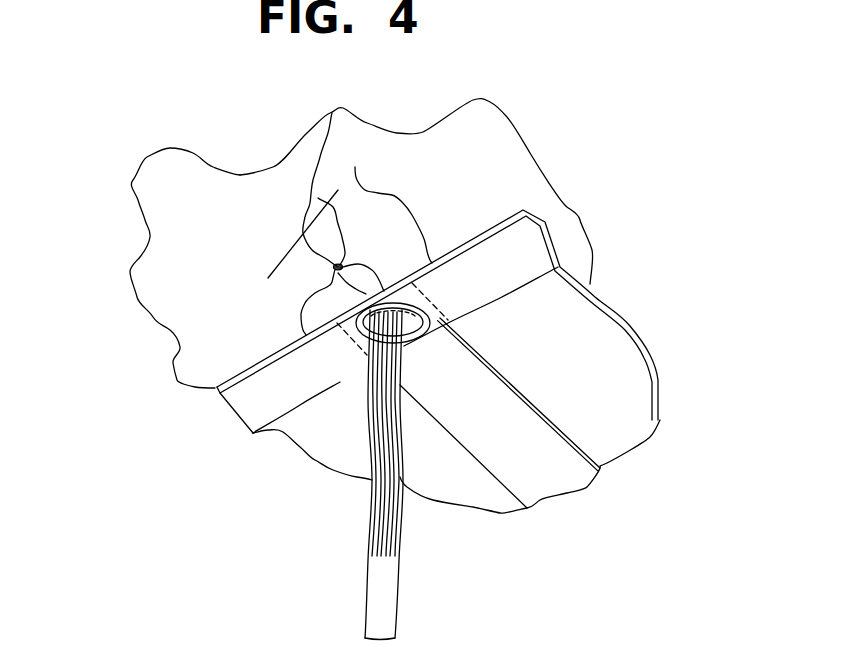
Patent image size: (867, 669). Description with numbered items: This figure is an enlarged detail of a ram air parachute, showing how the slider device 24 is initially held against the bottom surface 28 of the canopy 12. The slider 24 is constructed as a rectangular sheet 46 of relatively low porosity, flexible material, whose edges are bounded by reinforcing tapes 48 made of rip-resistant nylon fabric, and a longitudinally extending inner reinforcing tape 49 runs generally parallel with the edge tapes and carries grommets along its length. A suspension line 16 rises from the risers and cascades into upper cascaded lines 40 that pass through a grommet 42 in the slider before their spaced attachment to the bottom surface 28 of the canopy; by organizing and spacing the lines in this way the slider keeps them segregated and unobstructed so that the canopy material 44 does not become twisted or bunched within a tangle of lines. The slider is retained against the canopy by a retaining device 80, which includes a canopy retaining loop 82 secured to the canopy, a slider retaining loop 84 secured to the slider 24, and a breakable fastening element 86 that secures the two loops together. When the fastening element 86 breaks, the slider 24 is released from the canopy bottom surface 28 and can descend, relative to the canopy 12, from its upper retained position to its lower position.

The canopy 12 is at (485, 117).
The suspension line 16 is at (380, 583).
The slider device 24 is at (634, 324).
The bottom surface of the canopy 28 is at (213, 265).
The upper cascaded line 40 is at (372, 444).
The grommet 42 is at (428, 340).
The canopy material 44 is at (150, 172).
The rectangular sheet 46 is at (575, 385).
The reinforcing tape 48 is at (535, 247).
The inner reinforcing tape 49 is at (496, 450).
The retaining device 80 is at (270, 249).
The canopy retaining loop 82 is at (333, 112).
The slider retaining loop 84 is at (338, 287).
The breakable fastening element 86 is at (345, 262).